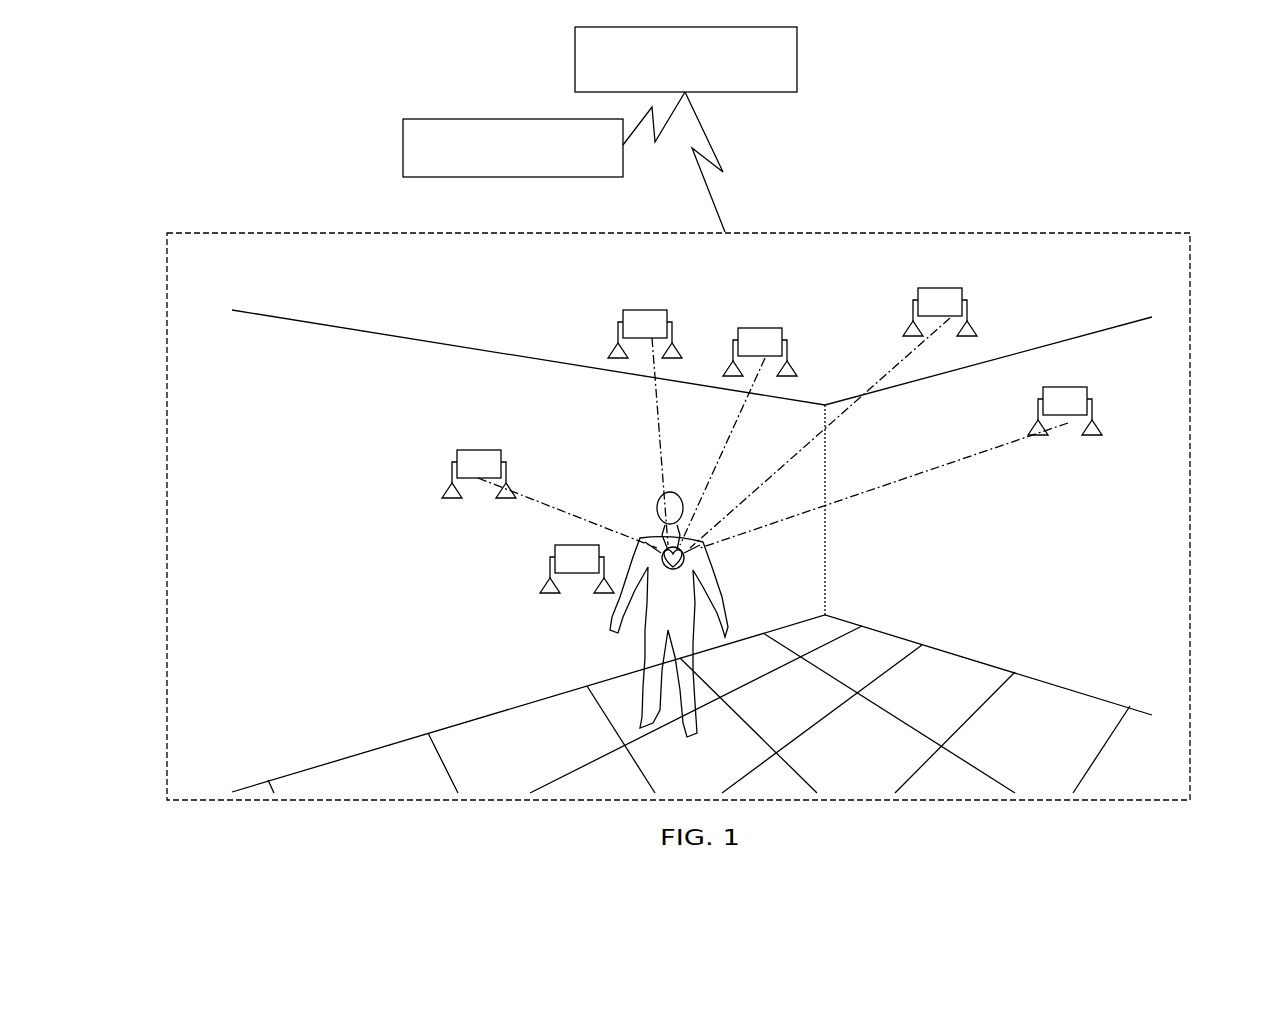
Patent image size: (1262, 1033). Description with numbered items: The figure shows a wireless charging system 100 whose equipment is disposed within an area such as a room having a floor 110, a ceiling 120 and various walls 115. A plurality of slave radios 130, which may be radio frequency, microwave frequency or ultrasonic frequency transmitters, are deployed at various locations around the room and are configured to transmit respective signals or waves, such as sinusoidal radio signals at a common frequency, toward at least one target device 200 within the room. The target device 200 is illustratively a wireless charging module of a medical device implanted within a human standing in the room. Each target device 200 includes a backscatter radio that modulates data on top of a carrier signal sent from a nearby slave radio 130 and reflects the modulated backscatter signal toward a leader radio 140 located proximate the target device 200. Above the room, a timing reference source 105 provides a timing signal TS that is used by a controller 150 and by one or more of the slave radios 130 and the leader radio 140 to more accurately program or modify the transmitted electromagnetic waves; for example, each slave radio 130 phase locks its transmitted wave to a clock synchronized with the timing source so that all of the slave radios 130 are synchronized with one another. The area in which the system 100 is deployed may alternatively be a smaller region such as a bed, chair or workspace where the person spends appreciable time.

The system 100 is at (1213, 661).
The timing reference source 105 is at (686, 129).
The floor 110 is at (692, 704).
The walls 115 is at (668, 531).
The ceiling 120 is at (692, 354).
The slave radio 130 is at (731, 406).
The leader radio 140 is at (511, 569).
The controller 150 is at (513, 148).
The target device 200 is at (660, 540).